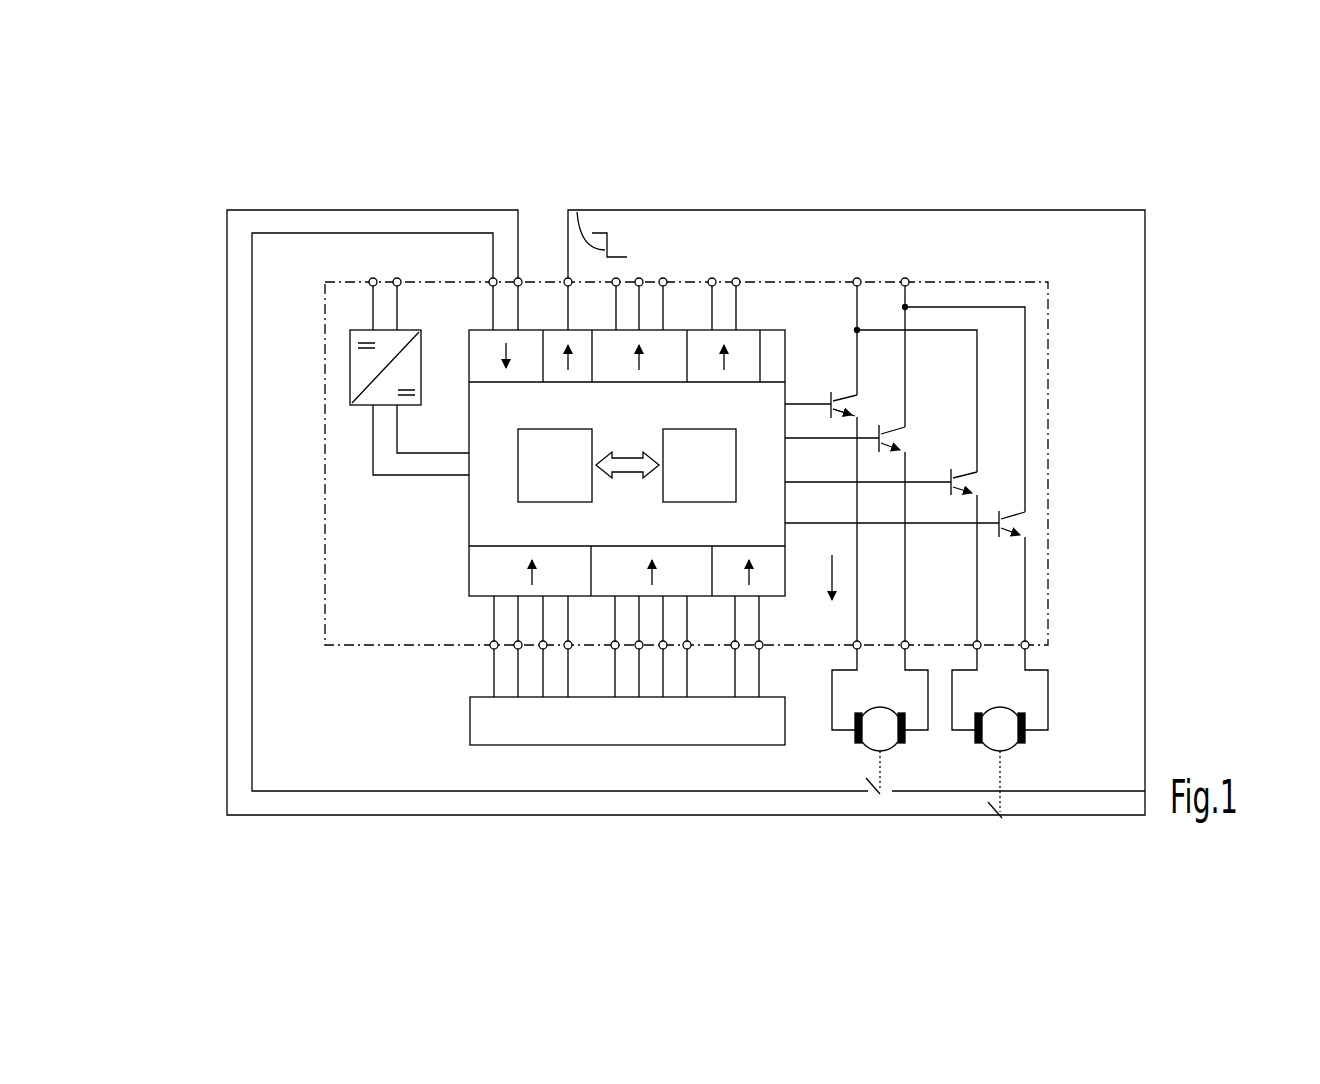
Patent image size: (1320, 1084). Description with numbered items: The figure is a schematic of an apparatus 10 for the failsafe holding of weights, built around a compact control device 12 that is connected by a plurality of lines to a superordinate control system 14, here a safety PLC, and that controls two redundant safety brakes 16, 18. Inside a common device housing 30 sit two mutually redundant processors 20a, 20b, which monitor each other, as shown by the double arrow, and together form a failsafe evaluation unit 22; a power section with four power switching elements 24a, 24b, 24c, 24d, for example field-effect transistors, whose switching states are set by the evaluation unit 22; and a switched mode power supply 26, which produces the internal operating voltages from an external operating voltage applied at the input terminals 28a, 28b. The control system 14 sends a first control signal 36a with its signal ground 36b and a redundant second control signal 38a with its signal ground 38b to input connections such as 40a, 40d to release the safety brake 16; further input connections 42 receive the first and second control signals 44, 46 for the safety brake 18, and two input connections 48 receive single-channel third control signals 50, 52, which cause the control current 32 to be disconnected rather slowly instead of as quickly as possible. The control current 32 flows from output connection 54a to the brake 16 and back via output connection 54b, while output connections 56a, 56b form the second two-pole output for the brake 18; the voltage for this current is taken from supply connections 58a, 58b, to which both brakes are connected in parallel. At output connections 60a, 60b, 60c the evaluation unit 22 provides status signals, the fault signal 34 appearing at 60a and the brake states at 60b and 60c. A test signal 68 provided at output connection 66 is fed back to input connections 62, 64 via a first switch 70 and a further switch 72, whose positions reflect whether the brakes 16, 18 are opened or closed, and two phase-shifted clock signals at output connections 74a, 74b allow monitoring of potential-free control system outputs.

The apparatus 10 is at (1022, 175).
The compact control device 12 is at (320, 578).
The superordinate control system 14 is at (470, 730).
The safety brake 16 is at (904, 736).
The safety brake 18 is at (1025, 738).
The processor 20a is at (518, 468).
The processor 20b is at (736, 468).
The failsafe evaluation unit 22 is at (468, 513).
The power switching element 24a is at (847, 395).
The power switching element 24b is at (898, 428).
The power switching element 24c is at (975, 474).
The power switching element 24d is at (1022, 514).
The switched mode power supply 26 is at (355, 363).
The input terminal 28a is at (373, 278).
The input terminal 28b is at (397, 278).
The device housing 30 is at (325, 508).
The control current 32 is at (832, 572).
The fault signal 34 is at (577, 209).
The first control signal 36a is at (494, 678).
The signal ground 36b is at (518, 678).
The second control signal 38a is at (543, 678).
The signal ground 38b is at (568, 675).
The input connection 40a is at (492, 642).
The input connection 40d is at (570, 650).
The input connection 42 is at (613, 649).
The first control signal 44 is at (663, 668).
The second control signal 46 is at (687, 672).
The input connection 48 is at (735, 649).
The third control signal 50 is at (737, 673).
The third control signal 52 is at (759, 672).
The output connection 54a is at (858, 641).
The output connection 54b is at (906, 641).
The output connection 56a is at (978, 641).
The output connection 56b is at (1028, 642).
The supply connection 58a is at (857, 278).
The supply connection 58b is at (905, 278).
The output connection 60a is at (618, 279).
The output connection 60b is at (640, 278).
The output connection 60c is at (664, 278).
The input connection 62 is at (491, 279).
The input connection 64 is at (519, 278).
The output connection 66 is at (567, 278).
The test signal 68 is at (283, 816).
The first switch 70 is at (880, 803).
The further switch 72 is at (1000, 822).
The output connection 74a is at (713, 278).
The output connection 74b is at (737, 278).